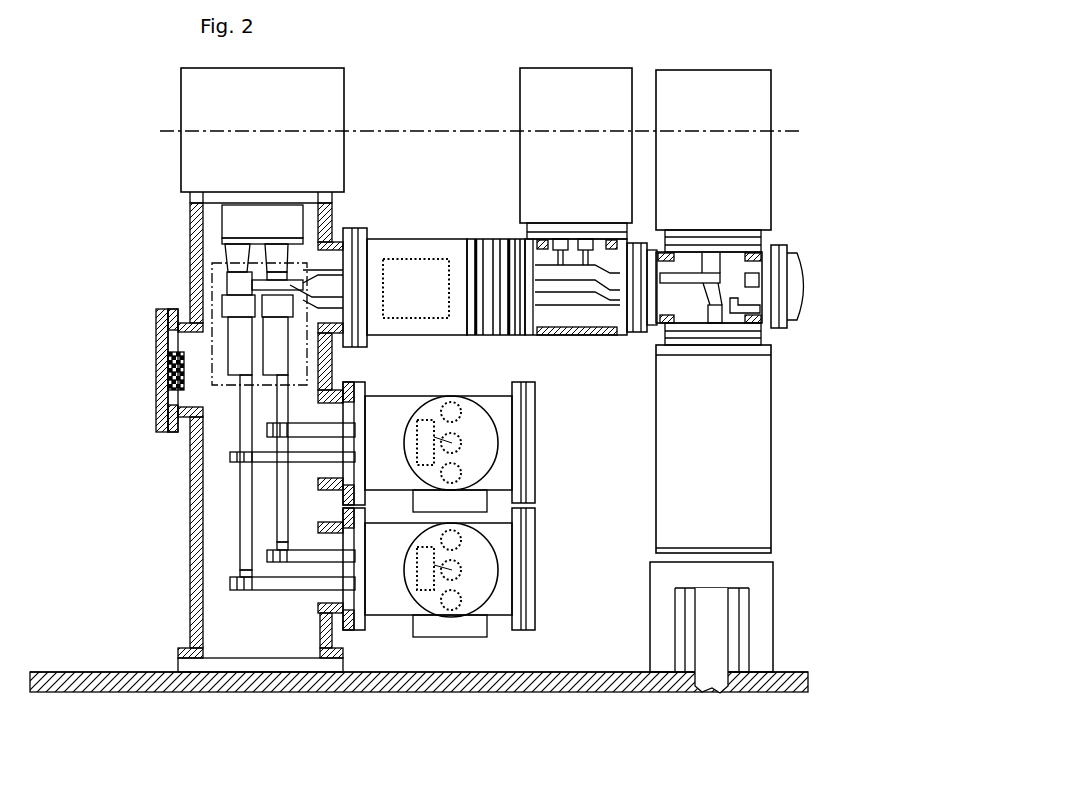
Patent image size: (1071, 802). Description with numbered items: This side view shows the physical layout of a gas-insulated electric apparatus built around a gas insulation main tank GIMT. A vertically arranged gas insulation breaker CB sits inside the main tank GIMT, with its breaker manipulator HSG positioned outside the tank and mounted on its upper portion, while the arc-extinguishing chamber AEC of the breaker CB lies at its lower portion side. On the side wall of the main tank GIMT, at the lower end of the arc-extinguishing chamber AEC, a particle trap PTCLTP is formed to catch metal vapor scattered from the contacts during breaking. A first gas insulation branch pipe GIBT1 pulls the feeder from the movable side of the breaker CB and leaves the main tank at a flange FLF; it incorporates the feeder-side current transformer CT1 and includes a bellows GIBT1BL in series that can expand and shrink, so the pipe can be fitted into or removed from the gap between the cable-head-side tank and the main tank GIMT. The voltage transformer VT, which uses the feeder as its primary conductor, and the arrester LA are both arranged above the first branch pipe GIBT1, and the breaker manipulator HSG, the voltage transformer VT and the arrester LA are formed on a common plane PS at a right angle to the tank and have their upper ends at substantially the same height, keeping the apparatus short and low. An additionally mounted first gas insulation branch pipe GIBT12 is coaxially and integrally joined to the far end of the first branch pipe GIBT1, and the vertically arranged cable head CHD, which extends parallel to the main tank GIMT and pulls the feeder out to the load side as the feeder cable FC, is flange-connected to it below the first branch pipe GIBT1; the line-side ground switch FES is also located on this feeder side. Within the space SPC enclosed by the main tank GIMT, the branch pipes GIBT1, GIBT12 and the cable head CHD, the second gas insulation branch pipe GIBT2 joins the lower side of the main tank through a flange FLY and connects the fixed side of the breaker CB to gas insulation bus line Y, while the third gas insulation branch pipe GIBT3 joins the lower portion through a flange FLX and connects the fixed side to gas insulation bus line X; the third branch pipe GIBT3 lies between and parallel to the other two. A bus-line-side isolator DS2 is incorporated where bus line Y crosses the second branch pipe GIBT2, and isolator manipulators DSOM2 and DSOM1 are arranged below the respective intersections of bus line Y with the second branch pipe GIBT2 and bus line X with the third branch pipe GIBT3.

The breaker manipulator HSG is at (181, 106).
The gas insulation breaker CB is at (190, 250).
The arc-extinguishing chamber AEC is at (278, 332).
The particle trap PTCLTP is at (175, 345).
The flange F FLF is at (363, 228).
The feeder-side current transformer CT1 is at (395, 259).
The first gas insulation branch pipe GIBT1 is at (410, 239).
The bellows GIBT1BL is at (510, 240).
The arrester LA is at (520, 106).
The voltage transformer VT is at (771, 110).
The plane PS is at (495, 131).
The line-side ground switch FES is at (795, 300).
The gas insulation main tank GIMT is at (336, 364).
The gas insulation bus line X is at (463, 397).
The third gas insulation branch pipe GIBT3 is at (488, 403).
The additionally-mounted first gas insulation branch pipe GIBT12 is at (653, 318).
The flange FLX is at (358, 388).
The space SPC is at (589, 406).
The isolator manipulator DSOM1 is at (483, 497).
The cable head CHD is at (758, 500).
The feeder cable FC is at (718, 664).
The flange FLY is at (363, 631).
The second gas insulation branch pipe GIBT2 is at (488, 608).
The bus-line-side isolator DS2 is at (425, 600).
The gas insulation bus line Y is at (443, 613).
The isolator manipulator DSOM2 is at (473, 625).